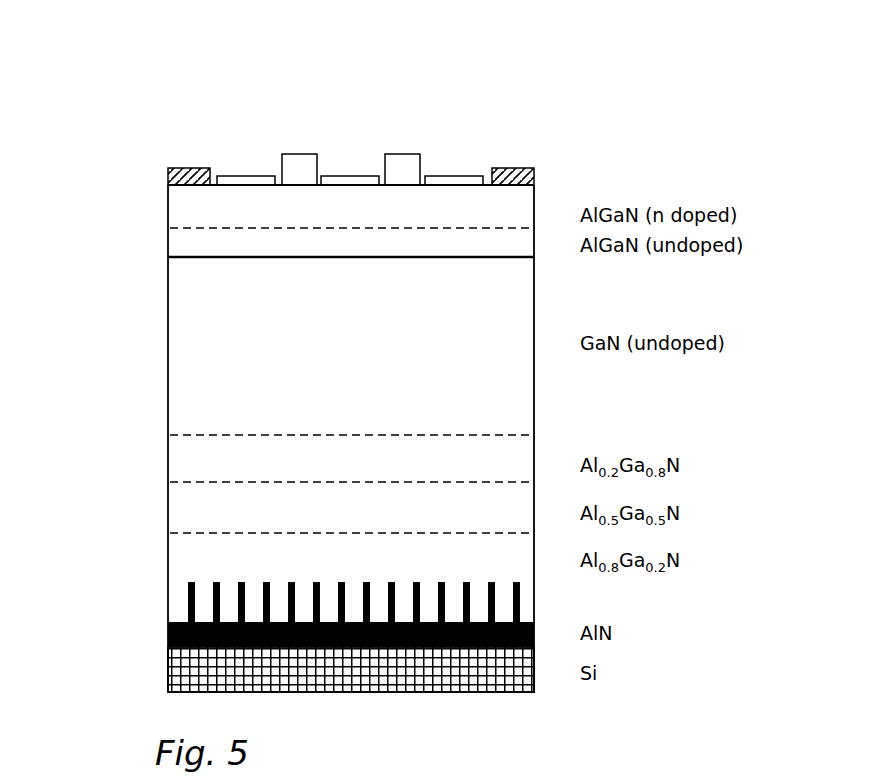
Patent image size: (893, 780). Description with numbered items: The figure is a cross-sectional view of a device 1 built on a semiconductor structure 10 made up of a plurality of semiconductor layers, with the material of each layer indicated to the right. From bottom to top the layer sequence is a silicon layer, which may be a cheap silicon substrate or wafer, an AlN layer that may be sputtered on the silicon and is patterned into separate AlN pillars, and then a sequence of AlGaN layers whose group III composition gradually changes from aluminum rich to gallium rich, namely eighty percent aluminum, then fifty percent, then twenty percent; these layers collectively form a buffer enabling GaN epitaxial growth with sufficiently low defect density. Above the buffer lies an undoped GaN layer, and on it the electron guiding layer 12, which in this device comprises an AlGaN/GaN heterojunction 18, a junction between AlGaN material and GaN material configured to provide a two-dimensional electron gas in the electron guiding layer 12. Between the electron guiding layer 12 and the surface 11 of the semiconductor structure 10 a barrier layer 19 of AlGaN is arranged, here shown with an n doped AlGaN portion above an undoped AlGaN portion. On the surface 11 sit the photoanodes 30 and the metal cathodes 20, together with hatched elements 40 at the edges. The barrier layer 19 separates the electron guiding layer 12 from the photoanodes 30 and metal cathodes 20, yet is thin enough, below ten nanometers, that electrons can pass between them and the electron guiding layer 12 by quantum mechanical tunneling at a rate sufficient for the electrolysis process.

The device 1 is at (155, 105).
The semiconductor structure 10 is at (557, 193).
The surface 11 is at (188, 193).
The electron guiding layer 12 is at (153, 259).
The AlGaN/GaN heterojunction 18 is at (327, 270).
The barrier layer 19 is at (143, 236).
The metal cathode 20 is at (303, 154).
The photoanode 30 is at (245, 176).
The edge contact 40 is at (193, 168).